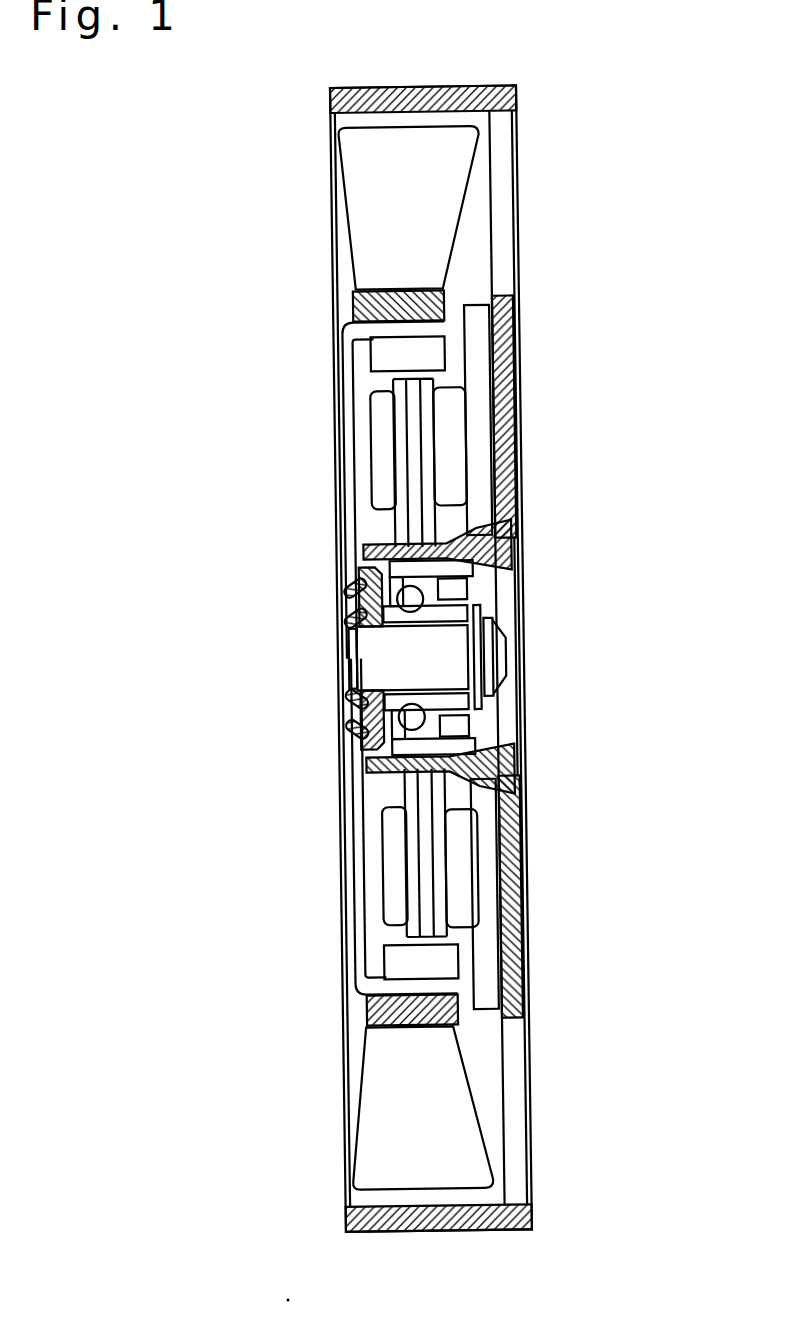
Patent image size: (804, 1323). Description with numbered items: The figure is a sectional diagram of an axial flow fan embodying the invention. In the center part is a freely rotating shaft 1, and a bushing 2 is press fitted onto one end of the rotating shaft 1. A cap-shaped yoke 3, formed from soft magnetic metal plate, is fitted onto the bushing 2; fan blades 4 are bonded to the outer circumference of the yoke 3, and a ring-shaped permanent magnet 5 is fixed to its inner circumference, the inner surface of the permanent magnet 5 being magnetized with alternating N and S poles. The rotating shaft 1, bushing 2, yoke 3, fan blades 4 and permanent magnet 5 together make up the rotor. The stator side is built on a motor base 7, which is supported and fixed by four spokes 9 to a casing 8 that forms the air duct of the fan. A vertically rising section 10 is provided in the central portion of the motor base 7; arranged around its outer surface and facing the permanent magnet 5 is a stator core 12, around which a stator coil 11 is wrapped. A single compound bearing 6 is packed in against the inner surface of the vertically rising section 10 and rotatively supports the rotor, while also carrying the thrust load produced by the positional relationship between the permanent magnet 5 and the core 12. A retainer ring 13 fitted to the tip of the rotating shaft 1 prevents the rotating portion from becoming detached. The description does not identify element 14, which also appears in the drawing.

The rotating shaft 1 is at (375, 670).
The bushing 2 is at (350, 600).
The cap-shaped yoke 3 is at (350, 538).
The fan blades 4 is at (368, 270).
The permanent magnet 5 is at (386, 353).
The compound bearing 6 is at (461, 568).
The motor base 7 is at (500, 390).
The casing 8 is at (515, 93).
The spokes 9 is at (503, 257).
The vertically rising section 10 is at (473, 537).
The stator coil 11 is at (386, 445).
The stator core 12 is at (418, 483).
The retainer ring 13 is at (480, 610).
The circuit board 14 is at (473, 337).